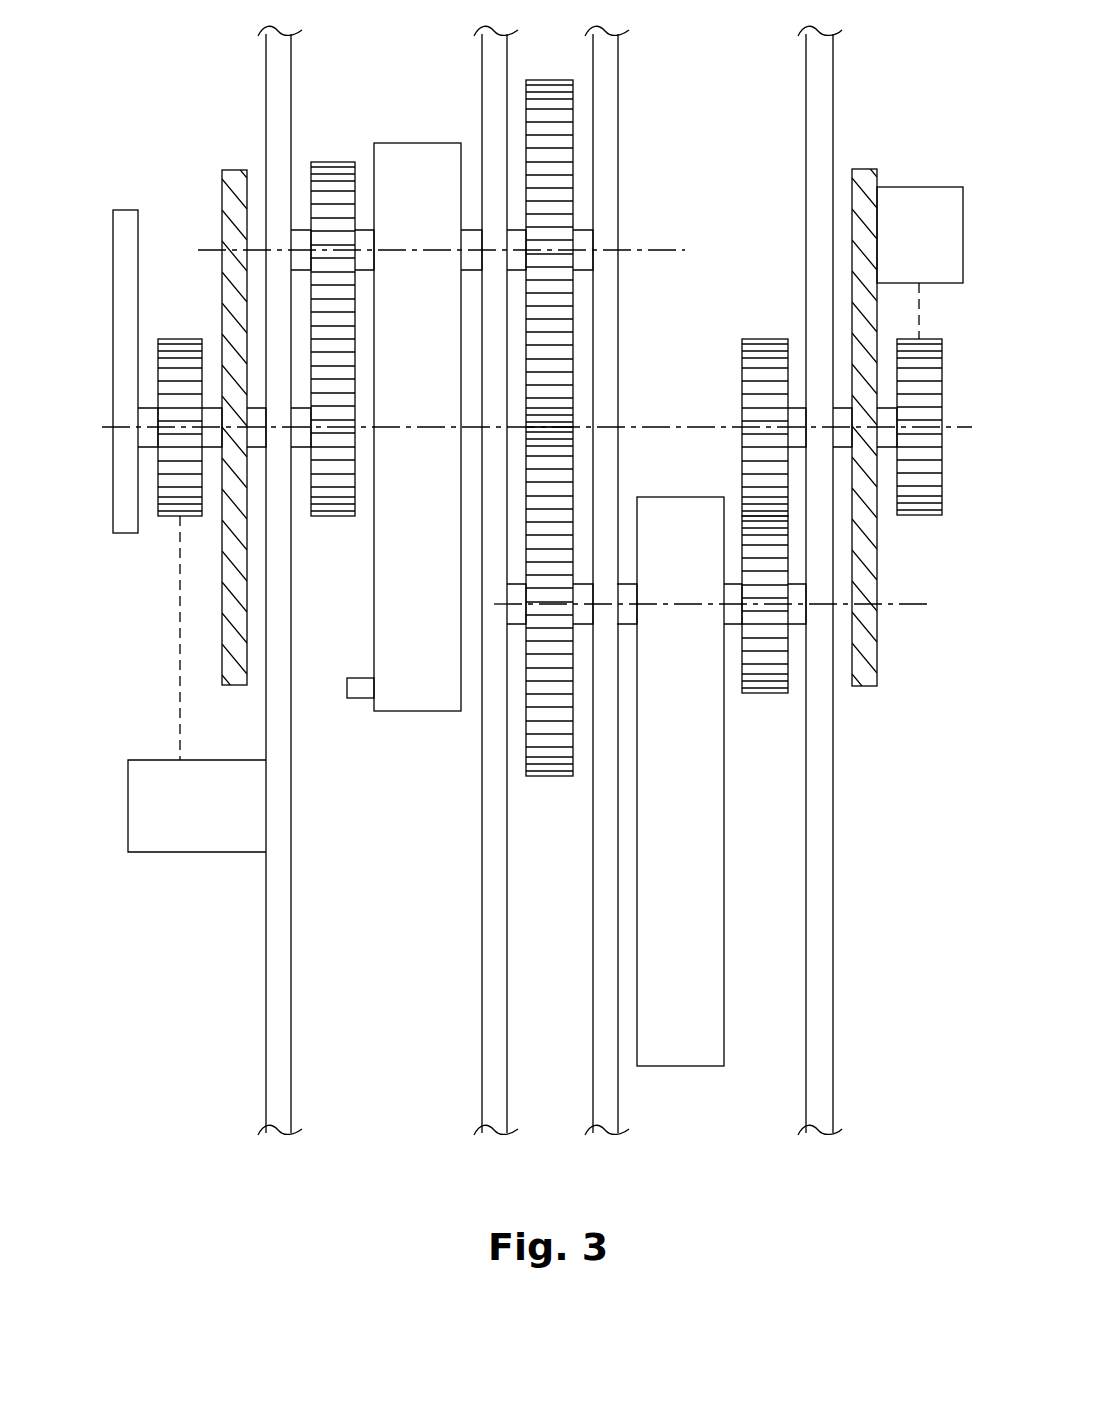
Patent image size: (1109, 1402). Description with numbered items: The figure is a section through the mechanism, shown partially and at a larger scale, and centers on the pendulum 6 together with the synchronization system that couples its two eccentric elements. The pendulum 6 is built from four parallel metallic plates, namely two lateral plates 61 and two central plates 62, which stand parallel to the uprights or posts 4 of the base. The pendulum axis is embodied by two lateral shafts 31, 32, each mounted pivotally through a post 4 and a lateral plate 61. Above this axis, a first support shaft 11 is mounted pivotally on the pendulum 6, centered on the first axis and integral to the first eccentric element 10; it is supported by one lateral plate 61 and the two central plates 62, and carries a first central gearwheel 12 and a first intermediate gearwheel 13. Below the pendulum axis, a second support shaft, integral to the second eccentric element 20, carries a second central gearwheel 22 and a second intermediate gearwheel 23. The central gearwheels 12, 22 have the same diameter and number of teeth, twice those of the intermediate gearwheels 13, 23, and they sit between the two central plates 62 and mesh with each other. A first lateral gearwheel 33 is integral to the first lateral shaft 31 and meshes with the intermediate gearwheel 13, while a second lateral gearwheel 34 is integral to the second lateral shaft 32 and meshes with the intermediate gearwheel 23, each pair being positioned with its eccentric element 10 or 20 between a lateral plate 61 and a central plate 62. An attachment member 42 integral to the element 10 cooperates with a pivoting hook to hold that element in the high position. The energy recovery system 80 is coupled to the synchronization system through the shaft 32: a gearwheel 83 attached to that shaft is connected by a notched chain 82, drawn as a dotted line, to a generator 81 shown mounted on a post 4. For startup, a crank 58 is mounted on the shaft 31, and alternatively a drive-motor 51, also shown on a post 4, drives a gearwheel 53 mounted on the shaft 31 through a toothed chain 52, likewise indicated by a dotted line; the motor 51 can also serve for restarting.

The pendulum 6 is at (240, 68).
The post 4 is at (240, 180).
The first eccentric element 10 is at (410, 693).
The first support shaft 11 is at (583, 240).
The first central gearwheel 12 is at (549, 108).
The first intermediate gearwheel 13 is at (337, 178).
The second eccentric element 20 is at (682, 1048).
The second central gearwheel 22 is at (548, 750).
The second intermediate gearwheel 23 is at (765, 665).
The first lateral shaft 31 is at (146, 437).
The second lateral shaft 32 is at (887, 421).
The first lateral gearwheel 33 is at (333, 490).
The second lateral gearwheel 34 is at (765, 377).
The attachment member 42 is at (363, 688).
The drive-motor 51 is at (170, 830).
The toothed chain 52 is at (178, 708).
The gearwheel 53 is at (186, 363).
The crank 58 is at (124, 268).
The lateral plate 61 is at (280, 68).
The central plate 62 is at (493, 72).
The energy recovery system 80 is at (922, 174).
The generator 81 is at (953, 200).
The notched chain 82 is at (920, 320).
The gearwheel 83 is at (933, 477).